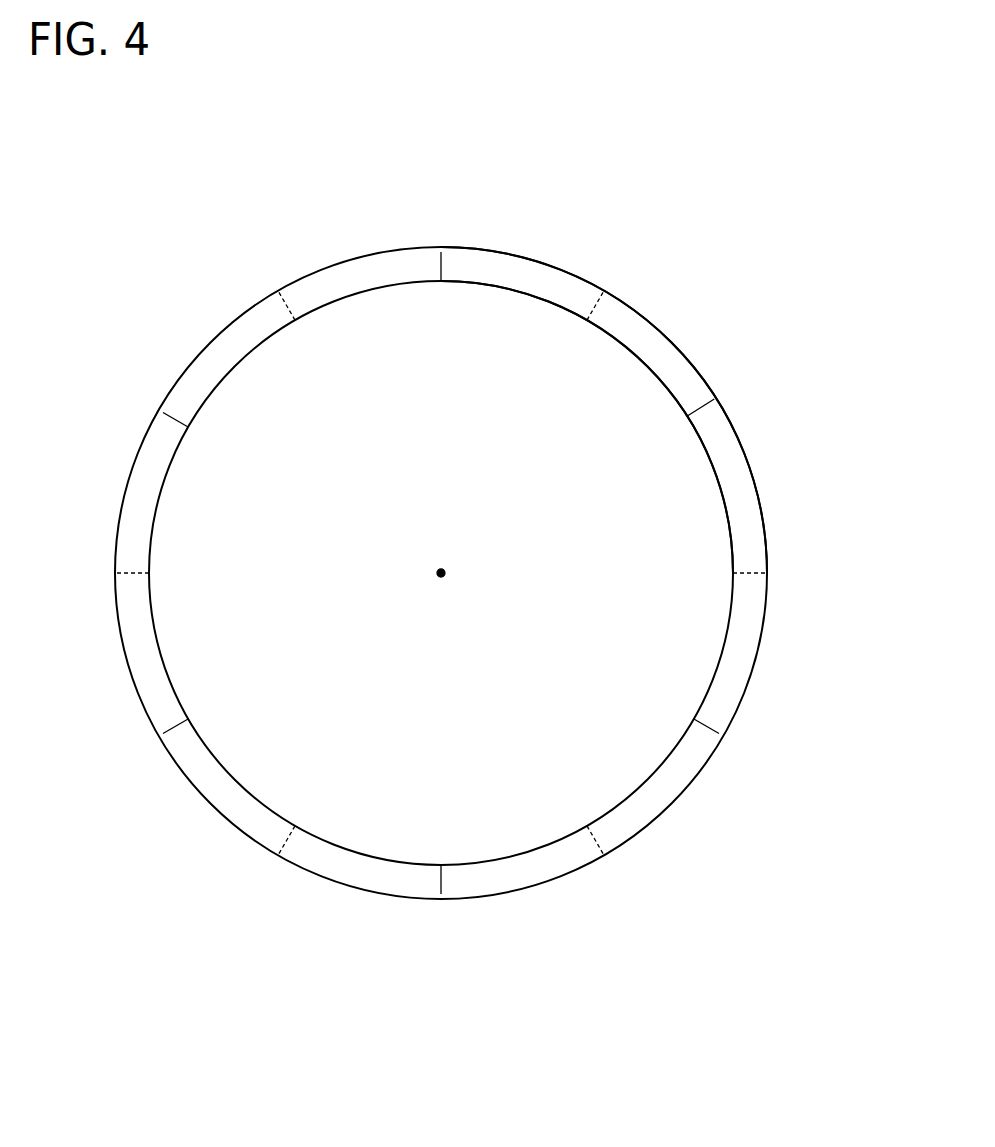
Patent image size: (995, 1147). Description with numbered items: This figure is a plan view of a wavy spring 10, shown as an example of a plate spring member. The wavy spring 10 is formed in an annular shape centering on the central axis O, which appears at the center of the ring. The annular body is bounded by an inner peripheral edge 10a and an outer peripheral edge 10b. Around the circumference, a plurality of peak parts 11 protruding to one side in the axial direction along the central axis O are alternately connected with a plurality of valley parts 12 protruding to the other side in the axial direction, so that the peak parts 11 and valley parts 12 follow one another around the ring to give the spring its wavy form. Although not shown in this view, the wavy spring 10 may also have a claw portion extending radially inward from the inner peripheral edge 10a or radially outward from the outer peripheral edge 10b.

The wavy spring 10 is at (657, 208).
The inner peripheral edge 10a is at (715, 469).
The outer peripheral edge 10b is at (748, 467).
The peak parts 11 is at (443, 265).
The valley parts 12 is at (293, 307).
The central axis O is at (442, 569).